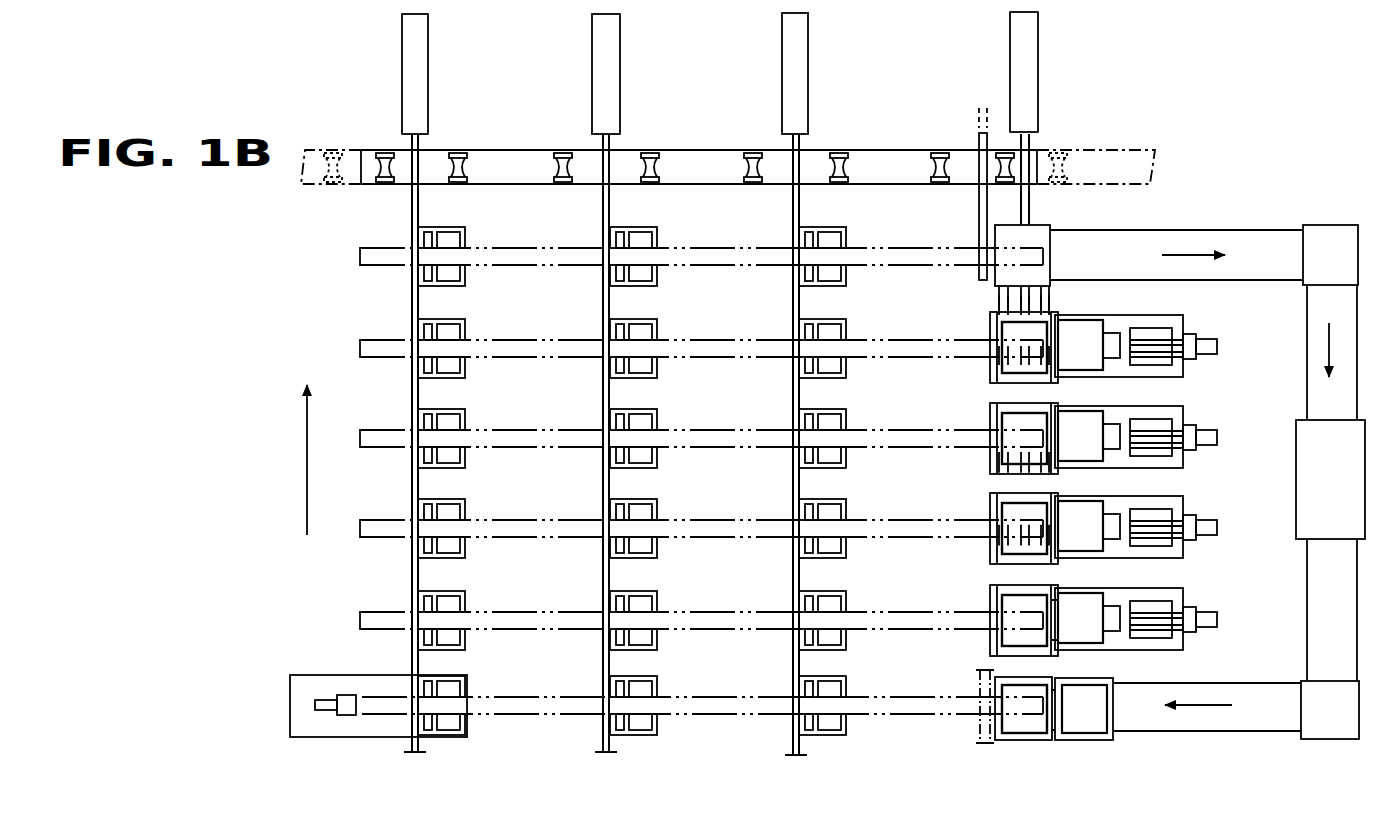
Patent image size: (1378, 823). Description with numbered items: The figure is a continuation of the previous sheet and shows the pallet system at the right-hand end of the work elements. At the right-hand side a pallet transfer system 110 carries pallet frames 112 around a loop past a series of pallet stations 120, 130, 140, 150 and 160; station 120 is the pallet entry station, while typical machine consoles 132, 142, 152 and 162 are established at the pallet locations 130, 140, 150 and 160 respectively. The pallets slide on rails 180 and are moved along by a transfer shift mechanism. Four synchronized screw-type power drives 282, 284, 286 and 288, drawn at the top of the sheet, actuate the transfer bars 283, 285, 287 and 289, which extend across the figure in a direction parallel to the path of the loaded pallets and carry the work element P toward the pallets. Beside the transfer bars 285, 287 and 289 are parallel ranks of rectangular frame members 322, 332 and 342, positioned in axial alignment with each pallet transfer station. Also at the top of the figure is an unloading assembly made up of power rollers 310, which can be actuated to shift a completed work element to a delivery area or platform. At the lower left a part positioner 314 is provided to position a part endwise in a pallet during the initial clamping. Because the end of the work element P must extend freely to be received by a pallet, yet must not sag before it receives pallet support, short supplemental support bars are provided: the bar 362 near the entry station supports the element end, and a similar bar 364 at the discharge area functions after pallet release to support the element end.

The pallet transfer system 110 is at (1223, 226).
The pallet frame 112 is at (990, 324).
The pallet entry station 120 is at (1010, 747).
The pallet station 130 is at (990, 645).
The machine console 132 is at (1192, 590).
The pallet station 140 is at (986, 552).
The machine console 142 is at (1192, 498).
The pallet station 150 is at (987, 460).
The machine console 152 is at (1192, 406).
The pallet station 160 is at (985, 366).
The machine console 162 is at (1182, 308).
The rails 180 is at (1043, 305).
The power drive 282 is at (1030, 72).
The transfer bar 283 is at (1031, 208).
The power drive 284 is at (800, 87).
The transfer bar 285 is at (801, 205).
The power drive 286 is at (612, 86).
The transfer bar 287 is at (612, 207).
The power drive 288 is at (416, 88).
The transfer bar 289 is at (420, 207).
The power rollers 310 is at (383, 163).
The part positioner 314 is at (348, 695).
The frame member 322 is at (846, 280).
The frame member 332 is at (658, 283).
The frame member 342 is at (466, 276).
The short support bar 362 is at (978, 735).
The short support bar 364 is at (977, 207).
The work element P is at (744, 256).